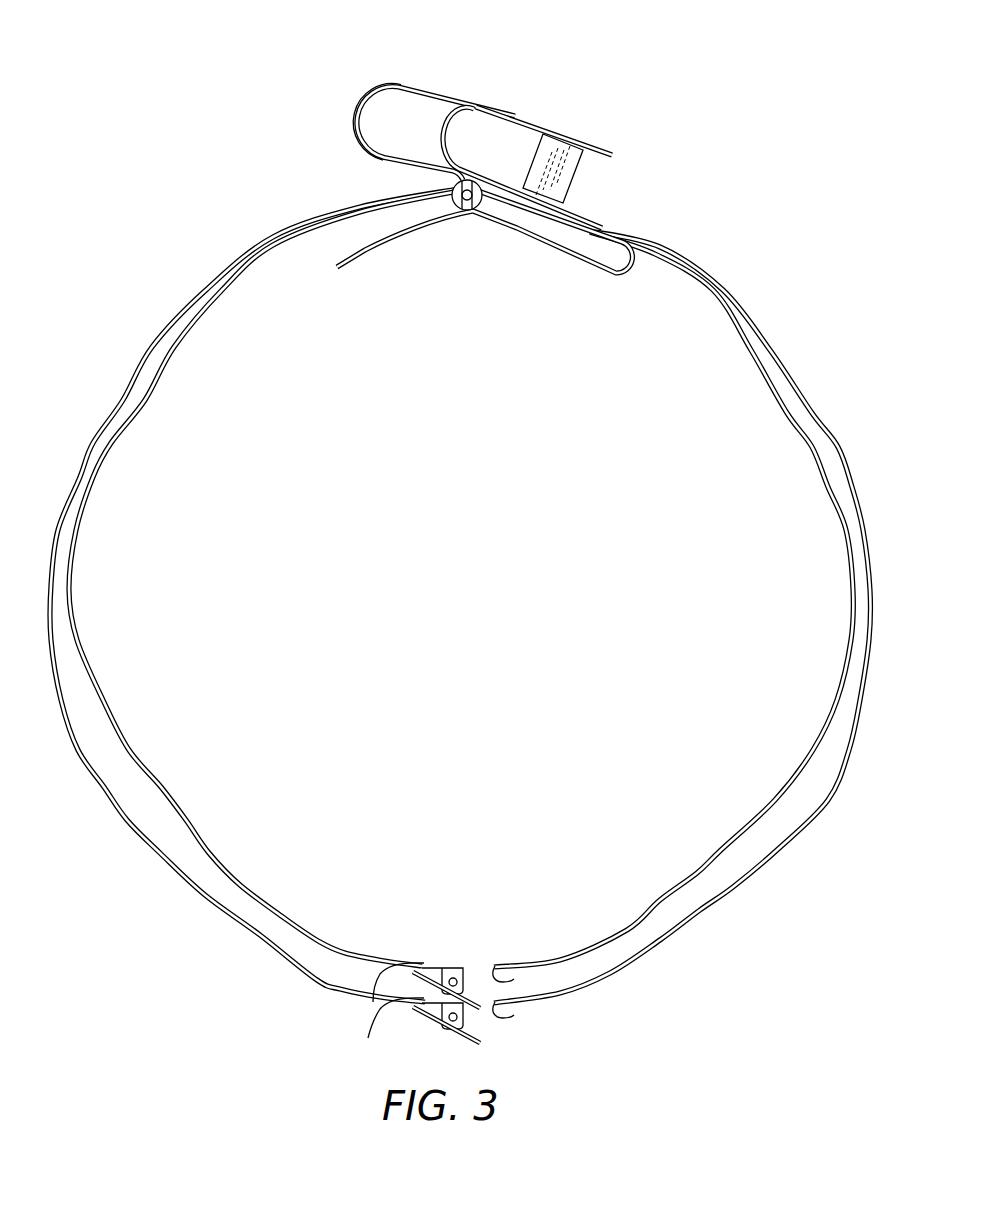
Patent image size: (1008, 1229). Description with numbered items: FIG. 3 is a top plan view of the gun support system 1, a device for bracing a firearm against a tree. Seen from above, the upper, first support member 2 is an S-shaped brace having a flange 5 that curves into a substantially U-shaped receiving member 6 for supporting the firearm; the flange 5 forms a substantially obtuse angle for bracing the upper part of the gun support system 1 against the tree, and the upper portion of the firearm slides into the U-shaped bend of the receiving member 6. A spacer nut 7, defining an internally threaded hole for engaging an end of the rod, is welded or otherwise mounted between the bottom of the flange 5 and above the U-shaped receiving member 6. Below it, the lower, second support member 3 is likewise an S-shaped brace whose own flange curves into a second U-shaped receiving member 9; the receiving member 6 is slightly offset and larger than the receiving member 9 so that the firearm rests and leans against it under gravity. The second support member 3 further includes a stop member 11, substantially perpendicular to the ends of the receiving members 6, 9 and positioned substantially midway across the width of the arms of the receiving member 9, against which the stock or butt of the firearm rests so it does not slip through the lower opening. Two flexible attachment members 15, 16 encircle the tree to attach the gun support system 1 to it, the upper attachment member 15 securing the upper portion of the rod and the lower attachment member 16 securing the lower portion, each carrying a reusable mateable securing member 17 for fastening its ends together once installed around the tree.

The gun support system 1 is at (460, 526).
The first support member 2 is at (443, 92).
The second support member 3 is at (612, 150).
The flange 5 is at (482, 217).
The U-shaped receiving member 6 is at (355, 113).
The spacer nut 7 is at (453, 192).
The U-shaped receiving member 9 is at (452, 137).
The stop member 11 is at (580, 163).
The attachment member 15 is at (608, 940).
The attachment member 16 is at (625, 970).
The securing member 17 is at (448, 968).